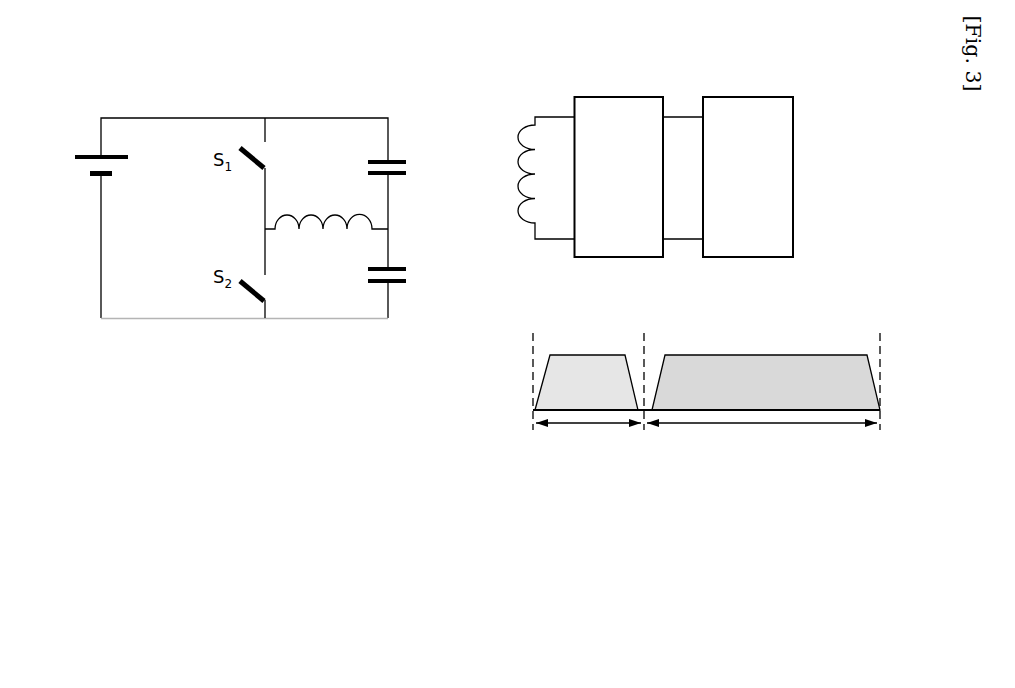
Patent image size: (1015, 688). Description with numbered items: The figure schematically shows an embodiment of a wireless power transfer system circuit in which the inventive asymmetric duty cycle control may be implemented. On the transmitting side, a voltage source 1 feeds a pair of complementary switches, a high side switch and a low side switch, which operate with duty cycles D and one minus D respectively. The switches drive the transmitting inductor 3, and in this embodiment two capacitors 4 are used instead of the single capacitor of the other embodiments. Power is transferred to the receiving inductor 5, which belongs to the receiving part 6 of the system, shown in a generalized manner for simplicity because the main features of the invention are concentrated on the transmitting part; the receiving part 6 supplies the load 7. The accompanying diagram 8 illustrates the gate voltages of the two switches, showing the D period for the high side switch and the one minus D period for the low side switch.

The voltage source 1 is at (95, 152).
The transmitting (Tx) inductor 3 is at (308, 207).
The capacitor 4 is at (412, 185).
The receiving (Rx) inductor 5 is at (523, 122).
The receiving (Rx) part 6 is at (606, 95).
The load 7 is at (736, 95).
The diagram 8 is at (890, 384).